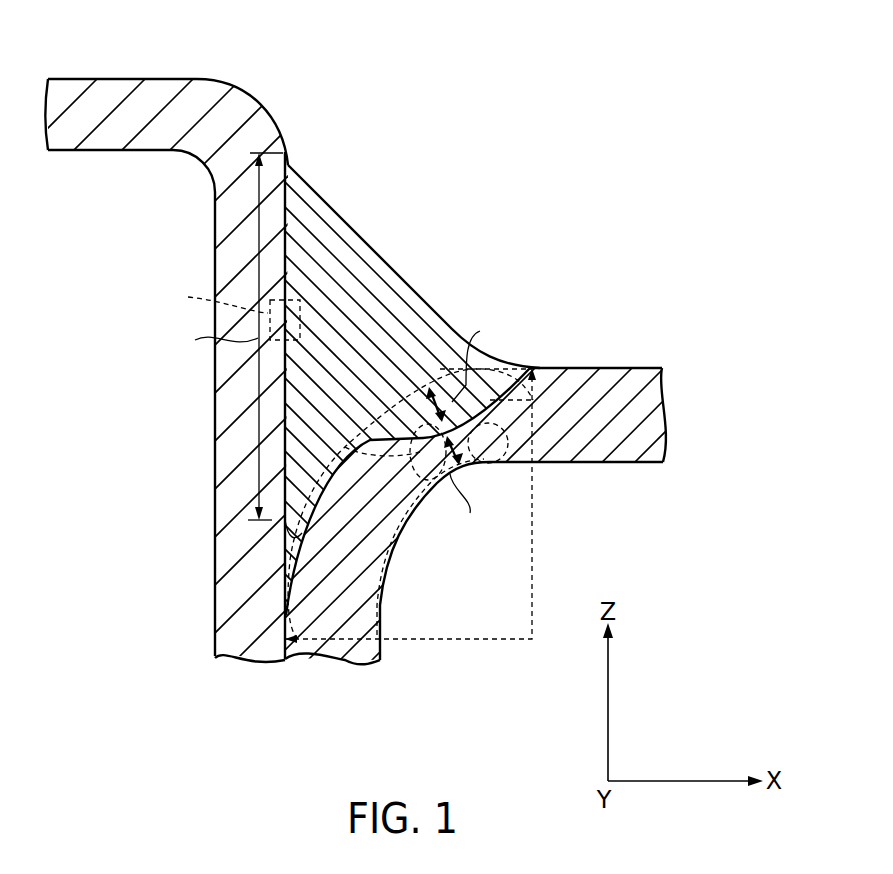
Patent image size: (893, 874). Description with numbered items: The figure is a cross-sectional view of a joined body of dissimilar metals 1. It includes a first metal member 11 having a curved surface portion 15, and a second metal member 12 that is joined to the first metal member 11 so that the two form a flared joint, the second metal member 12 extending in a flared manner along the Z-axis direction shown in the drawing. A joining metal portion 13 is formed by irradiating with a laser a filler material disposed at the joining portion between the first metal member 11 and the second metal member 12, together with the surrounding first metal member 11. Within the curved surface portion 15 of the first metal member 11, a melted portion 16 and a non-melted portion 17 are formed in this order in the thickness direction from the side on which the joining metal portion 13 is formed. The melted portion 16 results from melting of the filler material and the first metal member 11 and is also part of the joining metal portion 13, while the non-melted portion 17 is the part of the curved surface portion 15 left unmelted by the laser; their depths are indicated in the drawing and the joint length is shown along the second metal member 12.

The joined body of dissimilar metals 1 is at (446, 348).
The first metal member 11 is at (629, 464).
The second metal member 12 is at (176, 88).
The joining metal portion 13 is at (319, 222).
The curved surface portion 15 is at (437, 497).
The melted portion 16 is at (546, 372).
The non-melted portion 17 is at (511, 464).